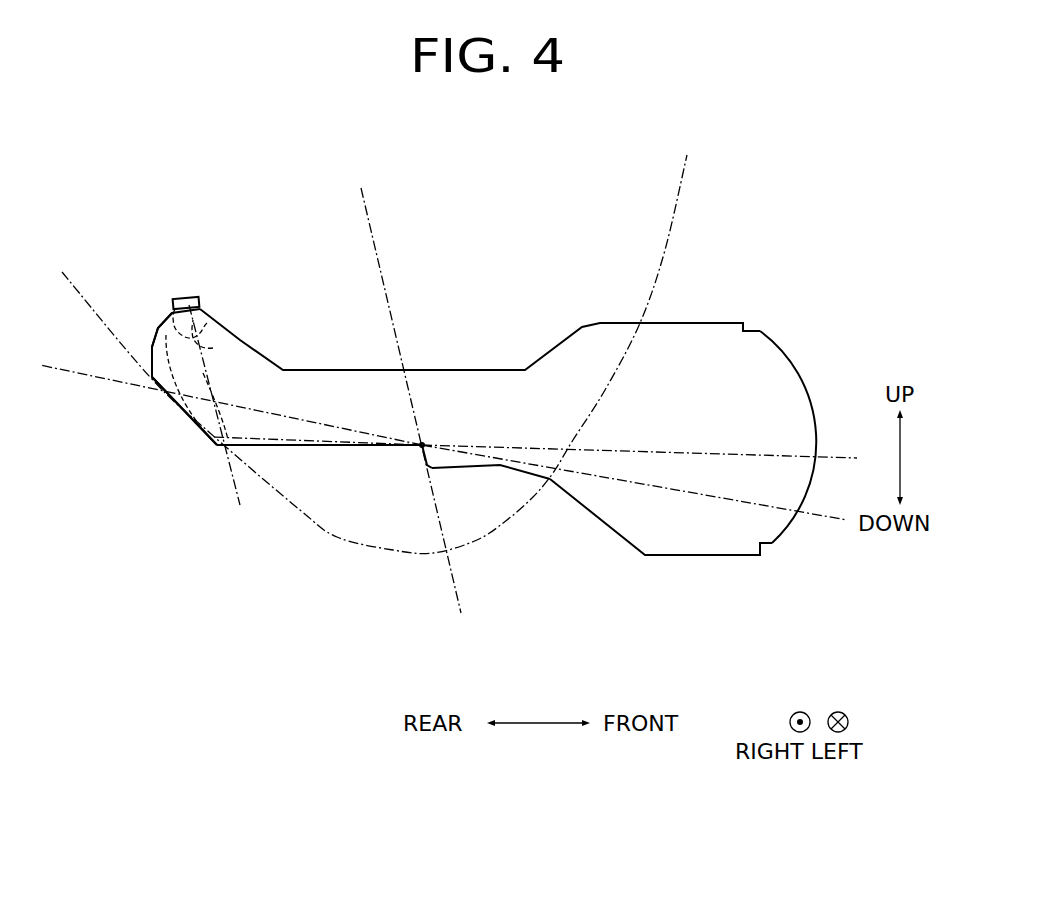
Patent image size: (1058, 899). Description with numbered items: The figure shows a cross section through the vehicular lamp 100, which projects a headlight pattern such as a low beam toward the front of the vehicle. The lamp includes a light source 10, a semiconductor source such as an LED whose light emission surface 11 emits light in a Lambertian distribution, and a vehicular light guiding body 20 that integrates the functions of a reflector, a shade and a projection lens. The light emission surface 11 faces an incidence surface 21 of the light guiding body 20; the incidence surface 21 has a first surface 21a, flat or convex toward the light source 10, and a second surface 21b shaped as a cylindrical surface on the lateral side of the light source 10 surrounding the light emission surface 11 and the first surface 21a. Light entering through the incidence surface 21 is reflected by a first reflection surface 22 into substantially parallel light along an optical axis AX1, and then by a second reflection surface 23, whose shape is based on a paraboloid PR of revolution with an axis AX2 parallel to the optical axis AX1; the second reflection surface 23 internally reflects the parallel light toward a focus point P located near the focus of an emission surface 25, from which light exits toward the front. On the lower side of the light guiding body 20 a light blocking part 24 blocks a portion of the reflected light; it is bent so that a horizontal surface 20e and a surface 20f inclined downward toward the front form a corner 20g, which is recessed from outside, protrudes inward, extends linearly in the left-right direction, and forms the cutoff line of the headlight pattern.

The vehicular lamp 100 is at (575, 182).
The light source 10 is at (187, 297).
The light emission surface 11 is at (206, 311).
The vehicular light guiding body 20 is at (675, 308).
The surface 20e is at (330, 446).
The surface 20f is at (428, 467).
The corner 20g is at (416, 447).
The incidence surface 21 is at (310, 295).
The first surface 21a is at (213, 348).
The second surface 21b is at (207, 323).
The first reflection surface 22 is at (152, 347).
The second reflection surface 23 is at (187, 413).
The light blocking part 24 is at (427, 438).
The emission surface 25 is at (786, 358).
The focus point P is at (421, 444).
The paraboloid of revolution PR is at (511, 528).
The optical axis AX1 is at (219, 417).
The axis AX2 is at (373, 243).